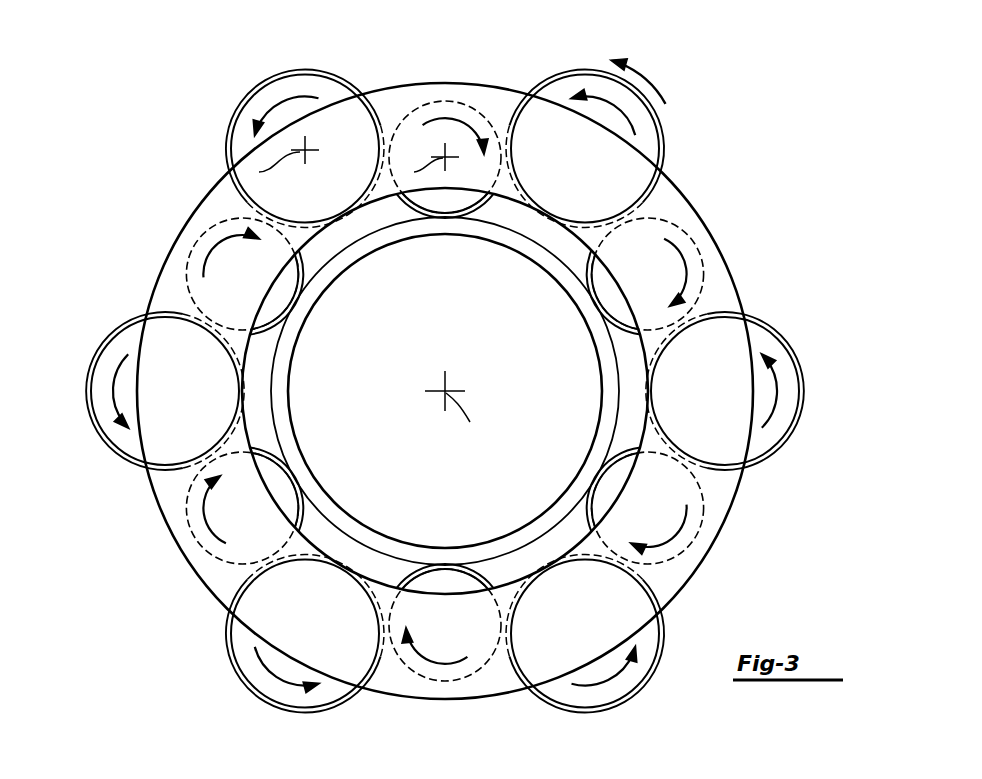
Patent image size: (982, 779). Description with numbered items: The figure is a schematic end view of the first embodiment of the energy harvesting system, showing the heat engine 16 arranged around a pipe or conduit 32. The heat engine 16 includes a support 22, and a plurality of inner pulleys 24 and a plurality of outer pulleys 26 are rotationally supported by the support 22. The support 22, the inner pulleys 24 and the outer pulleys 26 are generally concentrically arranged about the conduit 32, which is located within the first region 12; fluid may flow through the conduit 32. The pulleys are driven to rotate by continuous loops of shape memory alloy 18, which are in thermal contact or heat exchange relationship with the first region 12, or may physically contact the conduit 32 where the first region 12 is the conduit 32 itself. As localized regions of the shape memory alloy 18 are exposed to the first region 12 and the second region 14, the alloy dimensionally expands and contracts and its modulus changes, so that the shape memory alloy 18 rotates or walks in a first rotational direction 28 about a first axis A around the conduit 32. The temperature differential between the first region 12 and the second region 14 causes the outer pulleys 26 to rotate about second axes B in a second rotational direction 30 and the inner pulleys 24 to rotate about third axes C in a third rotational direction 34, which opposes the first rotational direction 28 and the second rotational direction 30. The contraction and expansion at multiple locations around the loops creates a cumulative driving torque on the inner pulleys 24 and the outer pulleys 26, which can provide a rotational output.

The first region 12 is at (445, 391).
The second region 14 is at (127, 298).
The heat engine 16 is at (178, 164).
The shape memory alloy 18 is at (228, 140).
The support 22 is at (385, 87).
The inner pulleys 24 is at (452, 104).
The outer pulleys 26 is at (300, 78).
The first rotational direction 28 is at (652, 82).
The second rotational direction 30 is at (243, 105).
The conduit 32 is at (598, 392).
The third rotational direction 34 is at (432, 122).